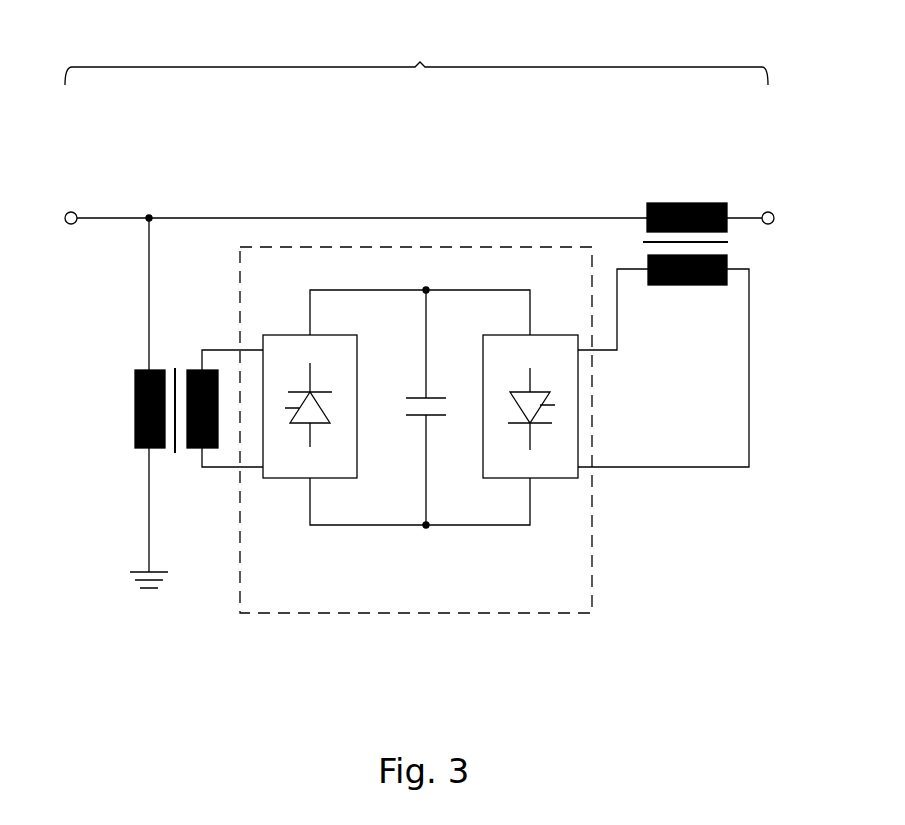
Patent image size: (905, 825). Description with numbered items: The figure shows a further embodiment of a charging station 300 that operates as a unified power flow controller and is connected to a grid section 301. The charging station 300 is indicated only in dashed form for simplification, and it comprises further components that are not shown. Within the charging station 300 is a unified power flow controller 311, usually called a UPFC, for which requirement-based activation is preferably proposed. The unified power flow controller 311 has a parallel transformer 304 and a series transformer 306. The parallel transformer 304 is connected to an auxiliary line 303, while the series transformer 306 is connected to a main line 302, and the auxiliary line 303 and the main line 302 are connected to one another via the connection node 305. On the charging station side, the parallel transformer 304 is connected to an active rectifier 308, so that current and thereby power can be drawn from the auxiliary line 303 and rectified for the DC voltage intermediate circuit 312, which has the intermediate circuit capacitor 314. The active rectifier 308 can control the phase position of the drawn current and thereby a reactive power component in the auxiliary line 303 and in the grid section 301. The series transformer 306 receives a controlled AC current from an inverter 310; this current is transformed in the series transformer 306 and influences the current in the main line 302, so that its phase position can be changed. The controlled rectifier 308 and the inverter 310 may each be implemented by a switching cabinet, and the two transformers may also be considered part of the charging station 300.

The charging station 300 is at (593, 572).
The grid section 301 is at (416, 58).
The main line 302 is at (225, 218).
The auxiliary line 303 is at (149, 290).
The parallel transformer 304 is at (173, 460).
The connection node 305 is at (149, 215).
The series transformer 306 is at (720, 188).
The active rectifier 308 is at (273, 480).
The inverter 310 is at (565, 480).
The unified power flow controller 311 is at (388, 560).
The DC voltage intermediate circuit 312 is at (422, 295).
The intermediate circuit capacitor 314 is at (420, 418).